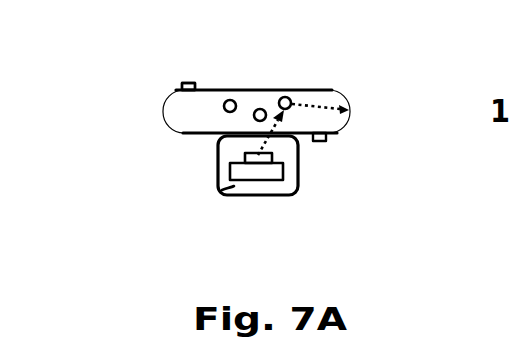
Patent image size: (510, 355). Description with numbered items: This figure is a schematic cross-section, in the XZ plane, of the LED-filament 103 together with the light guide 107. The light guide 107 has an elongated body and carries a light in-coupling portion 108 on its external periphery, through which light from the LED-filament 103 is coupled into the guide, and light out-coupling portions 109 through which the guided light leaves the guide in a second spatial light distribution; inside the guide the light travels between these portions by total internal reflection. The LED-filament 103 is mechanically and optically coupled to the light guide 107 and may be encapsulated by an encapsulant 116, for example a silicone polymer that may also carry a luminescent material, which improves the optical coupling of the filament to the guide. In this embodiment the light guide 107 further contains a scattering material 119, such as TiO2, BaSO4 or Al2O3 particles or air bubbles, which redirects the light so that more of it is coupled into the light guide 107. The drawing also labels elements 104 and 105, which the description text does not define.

The LED-filament 103 is at (323, 200).
The connection cable 104 is at (283, 163).
The connection cable 105 is at (243, 157).
The light guide 107 is at (317, 69).
The light in-coupling portion 108 is at (239, 137).
The light out-coupling portion 109 is at (182, 86).
The encapsulant 116 is at (224, 192).
The scattering material 119 is at (224, 104).